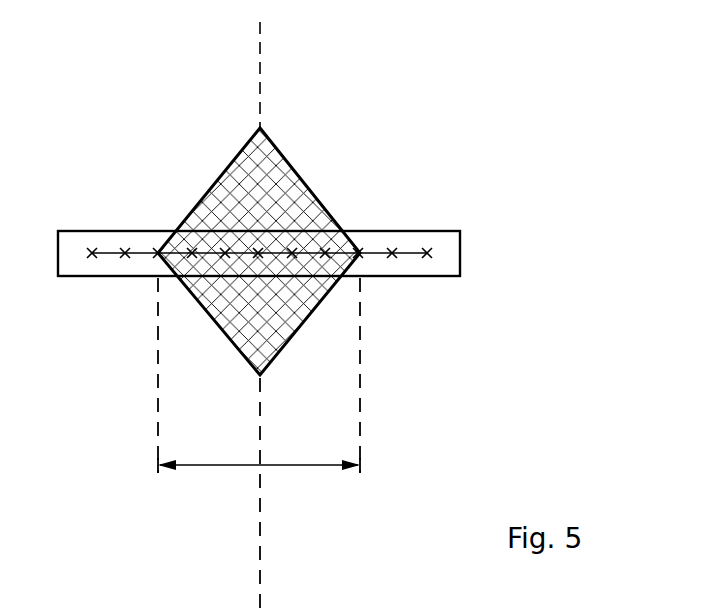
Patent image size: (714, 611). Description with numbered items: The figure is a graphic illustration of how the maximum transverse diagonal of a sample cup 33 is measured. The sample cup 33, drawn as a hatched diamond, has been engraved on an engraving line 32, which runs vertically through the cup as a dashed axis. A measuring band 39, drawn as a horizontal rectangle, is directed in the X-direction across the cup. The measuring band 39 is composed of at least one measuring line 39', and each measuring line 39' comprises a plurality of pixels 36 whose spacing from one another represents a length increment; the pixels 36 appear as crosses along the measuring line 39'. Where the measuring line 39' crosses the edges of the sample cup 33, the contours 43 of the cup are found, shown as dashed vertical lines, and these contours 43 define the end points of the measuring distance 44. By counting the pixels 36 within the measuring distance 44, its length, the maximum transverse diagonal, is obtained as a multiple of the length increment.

The engraving line 32 is at (260, 63).
The sample cup 33 is at (275, 170).
The pixels 36 is at (125, 252).
The measuring band 39 is at (276, 209).
The measuring line 39' is at (293, 298).
The contours 43 is at (155, 365).
The measuring distance 44 is at (207, 468).